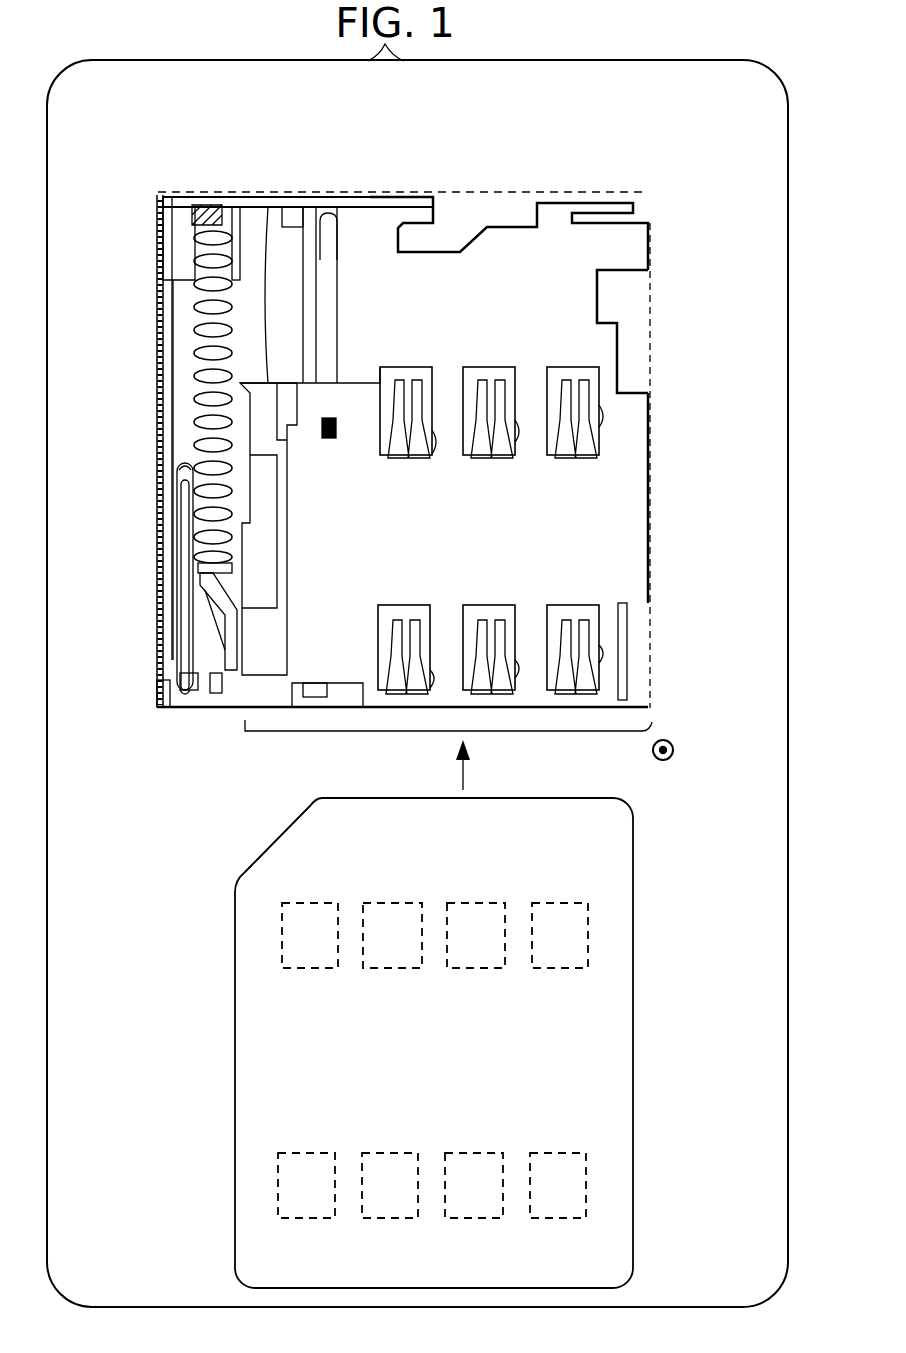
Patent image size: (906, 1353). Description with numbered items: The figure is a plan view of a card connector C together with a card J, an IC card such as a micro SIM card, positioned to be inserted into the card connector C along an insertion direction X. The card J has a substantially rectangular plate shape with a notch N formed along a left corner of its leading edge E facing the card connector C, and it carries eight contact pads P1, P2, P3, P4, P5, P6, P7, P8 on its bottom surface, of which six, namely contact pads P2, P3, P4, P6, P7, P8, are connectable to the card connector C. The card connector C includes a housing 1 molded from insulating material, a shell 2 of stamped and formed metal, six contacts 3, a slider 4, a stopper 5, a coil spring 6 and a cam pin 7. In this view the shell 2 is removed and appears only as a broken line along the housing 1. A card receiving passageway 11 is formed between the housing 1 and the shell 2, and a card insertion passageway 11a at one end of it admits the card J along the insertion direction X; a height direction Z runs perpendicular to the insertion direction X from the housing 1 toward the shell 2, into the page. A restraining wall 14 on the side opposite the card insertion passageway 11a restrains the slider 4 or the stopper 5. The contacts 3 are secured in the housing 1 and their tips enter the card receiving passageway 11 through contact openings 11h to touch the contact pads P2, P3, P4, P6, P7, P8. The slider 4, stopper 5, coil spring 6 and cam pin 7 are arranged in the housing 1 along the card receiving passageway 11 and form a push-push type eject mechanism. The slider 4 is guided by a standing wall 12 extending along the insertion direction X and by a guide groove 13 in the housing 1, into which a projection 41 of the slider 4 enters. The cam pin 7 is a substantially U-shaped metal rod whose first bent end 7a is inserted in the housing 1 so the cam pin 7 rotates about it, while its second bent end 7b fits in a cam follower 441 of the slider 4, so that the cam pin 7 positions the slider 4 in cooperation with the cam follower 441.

The housing 1 is at (508, 221).
The shell 2 is at (652, 287).
The contacts 3 is at (582, 375).
The slider 4 is at (292, 487).
The stopper 5 is at (267, 200).
The coil spring 6 is at (193, 340).
The cam pin 7 is at (171, 632).
The first bent end 7a is at (184, 700).
The second bent end 7b is at (185, 490).
The card receiving passageway 11 is at (558, 530).
The card insertion passageway 11a is at (448, 748).
The contact openings 11h is at (602, 412).
The standing wall 12 is at (186, 385).
The guide groove 13 is at (332, 257).
The restraining wall 14 is at (295, 205).
The projection 41 is at (347, 418).
The cam follower 441 is at (186, 600).
The card connector C is at (414, 152).
The card J is at (228, 1003).
The notch N is at (288, 832).
The leading edge E is at (530, 798).
The insertion direction X is at (474, 766).
The height direction Z is at (672, 755).
The contact pad P1 is at (312, 903).
The contact pad P2 is at (394, 903).
The contact pad P3 is at (478, 903).
The contact pad P4 is at (562, 903).
The contact pad P5 is at (310, 1153).
The contact pad P6 is at (394, 1153).
The contact pad P7 is at (478, 1153).
The contact pad P8 is at (560, 1153).